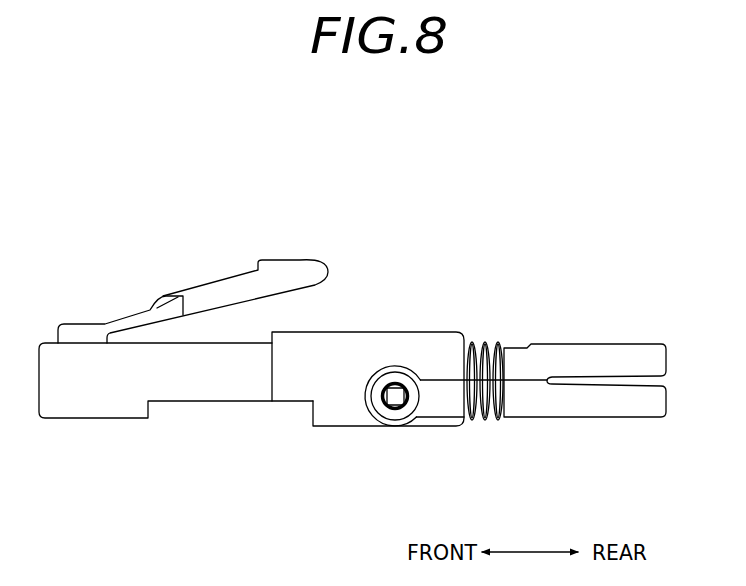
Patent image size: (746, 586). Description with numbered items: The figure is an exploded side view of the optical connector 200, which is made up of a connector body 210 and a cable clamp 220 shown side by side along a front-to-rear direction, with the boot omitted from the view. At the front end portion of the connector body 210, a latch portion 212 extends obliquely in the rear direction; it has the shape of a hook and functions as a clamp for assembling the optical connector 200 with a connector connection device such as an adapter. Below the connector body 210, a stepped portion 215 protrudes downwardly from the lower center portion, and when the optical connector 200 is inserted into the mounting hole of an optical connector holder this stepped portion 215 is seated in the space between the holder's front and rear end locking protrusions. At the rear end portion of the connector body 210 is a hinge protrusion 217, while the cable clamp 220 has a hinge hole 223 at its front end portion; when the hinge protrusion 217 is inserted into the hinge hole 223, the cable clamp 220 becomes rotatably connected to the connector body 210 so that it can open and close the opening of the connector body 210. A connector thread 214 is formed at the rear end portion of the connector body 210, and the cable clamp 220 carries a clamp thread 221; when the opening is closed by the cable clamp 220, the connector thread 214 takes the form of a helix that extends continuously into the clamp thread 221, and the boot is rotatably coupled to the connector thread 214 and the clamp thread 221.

The optical connector 200 is at (492, 238).
The connector body 210 is at (185, 395).
The latch portion 212 is at (231, 290).
The connector thread 214 is at (482, 343).
The stepped portion 215 is at (333, 418).
The hinge protrusion 217 is at (396, 390).
The cable clamp 220 is at (437, 408).
The clamp thread 221 is at (493, 420).
The hinge hole 223 is at (396, 398).